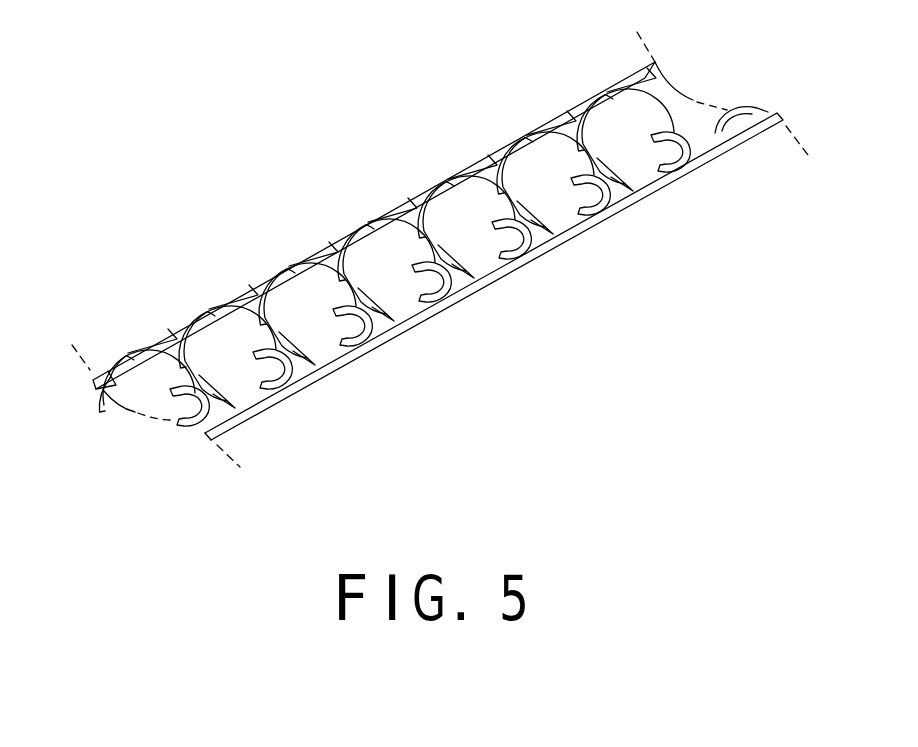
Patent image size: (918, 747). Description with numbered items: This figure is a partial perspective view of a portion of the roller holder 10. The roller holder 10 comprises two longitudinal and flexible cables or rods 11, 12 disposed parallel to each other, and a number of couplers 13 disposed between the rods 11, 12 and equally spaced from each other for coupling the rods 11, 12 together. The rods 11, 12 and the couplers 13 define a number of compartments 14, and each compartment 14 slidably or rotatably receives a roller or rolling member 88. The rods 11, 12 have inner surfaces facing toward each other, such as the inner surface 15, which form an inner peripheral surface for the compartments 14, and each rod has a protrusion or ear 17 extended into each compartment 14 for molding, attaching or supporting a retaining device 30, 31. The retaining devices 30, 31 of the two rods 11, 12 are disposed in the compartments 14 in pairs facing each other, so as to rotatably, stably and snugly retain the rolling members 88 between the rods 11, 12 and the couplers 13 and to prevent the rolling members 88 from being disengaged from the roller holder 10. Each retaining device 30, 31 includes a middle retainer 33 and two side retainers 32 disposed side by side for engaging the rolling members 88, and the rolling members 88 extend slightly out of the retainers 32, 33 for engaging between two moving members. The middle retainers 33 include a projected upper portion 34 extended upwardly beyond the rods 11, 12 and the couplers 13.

The roller holder 10 is at (325, 182).
The rod 11 is at (643, 77).
The rod 12 is at (727, 148).
The coupler 13 is at (233, 423).
The compartment 14 is at (565, 205).
The inner surface 15 is at (170, 342).
The protrusion or ear 17 is at (437, 297).
The retaining device 30 is at (198, 318).
The retaining device 31 is at (177, 423).
The side retainer 32 is at (133, 355).
The middle retainer 33 is at (274, 276).
The projected upper portion 34 is at (502, 232).
The rolling member 88 is at (600, 125).